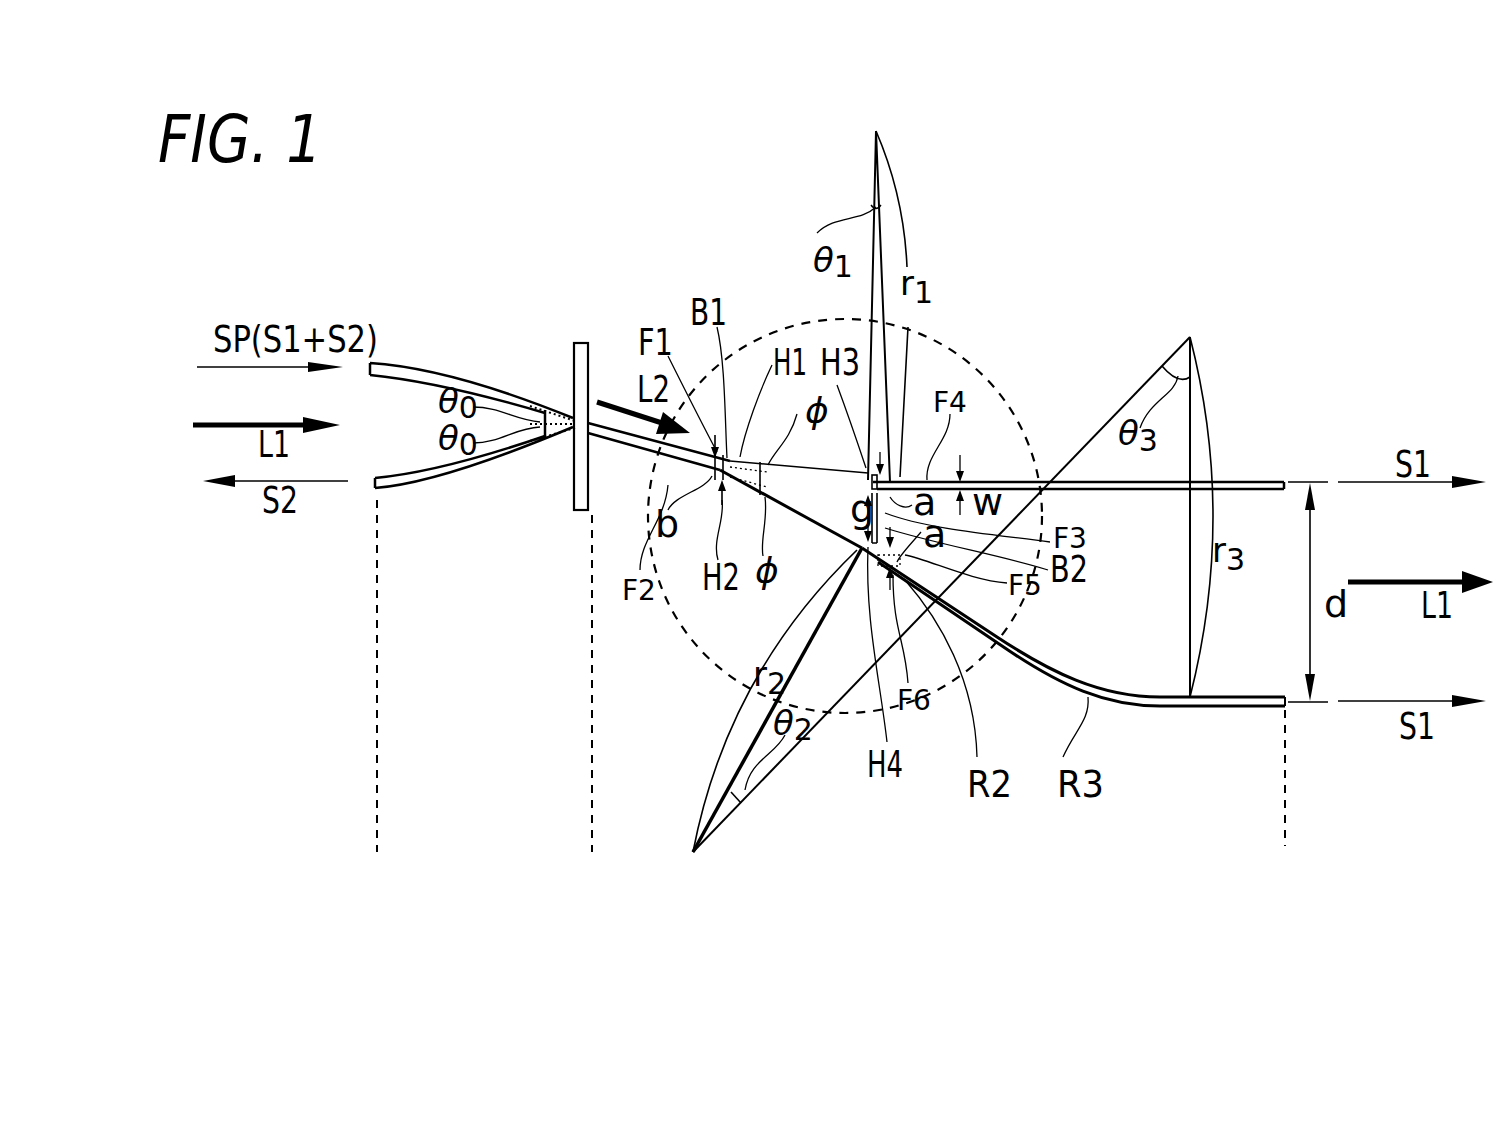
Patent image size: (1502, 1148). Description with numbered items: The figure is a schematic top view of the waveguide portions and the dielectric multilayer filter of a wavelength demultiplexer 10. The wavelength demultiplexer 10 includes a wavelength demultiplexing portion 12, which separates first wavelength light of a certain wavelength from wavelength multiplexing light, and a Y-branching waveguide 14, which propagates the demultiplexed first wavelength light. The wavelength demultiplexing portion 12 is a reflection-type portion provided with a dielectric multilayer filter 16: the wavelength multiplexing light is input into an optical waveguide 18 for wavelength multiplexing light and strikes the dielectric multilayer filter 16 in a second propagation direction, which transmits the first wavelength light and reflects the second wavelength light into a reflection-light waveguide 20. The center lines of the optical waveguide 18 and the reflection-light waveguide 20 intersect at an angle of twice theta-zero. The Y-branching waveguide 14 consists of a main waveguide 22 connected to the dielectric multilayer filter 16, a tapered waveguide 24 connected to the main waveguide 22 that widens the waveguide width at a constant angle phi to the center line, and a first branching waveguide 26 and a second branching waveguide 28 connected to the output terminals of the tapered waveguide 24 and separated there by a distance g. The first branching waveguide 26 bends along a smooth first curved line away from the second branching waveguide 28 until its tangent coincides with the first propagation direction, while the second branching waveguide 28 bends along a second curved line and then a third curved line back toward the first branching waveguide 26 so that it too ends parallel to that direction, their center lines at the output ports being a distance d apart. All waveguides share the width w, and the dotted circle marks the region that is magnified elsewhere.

The wavelength demultiplexer 10 is at (954, 916).
The wavelength demultiplexing portion 12 is at (590, 858).
The Y-branching waveguide 14 is at (1285, 858).
The dielectric multilayer filter 16 is at (580, 512).
The optical waveguide for wavelength multiplexing light 18 is at (458, 372).
The reflection-light waveguide 20 is at (440, 480).
The main waveguide 22 is at (643, 443).
The tapered waveguide 24 is at (830, 530).
The first branching waveguide 26 is at (1008, 478).
The second branching waveguide 28 is at (1097, 800).